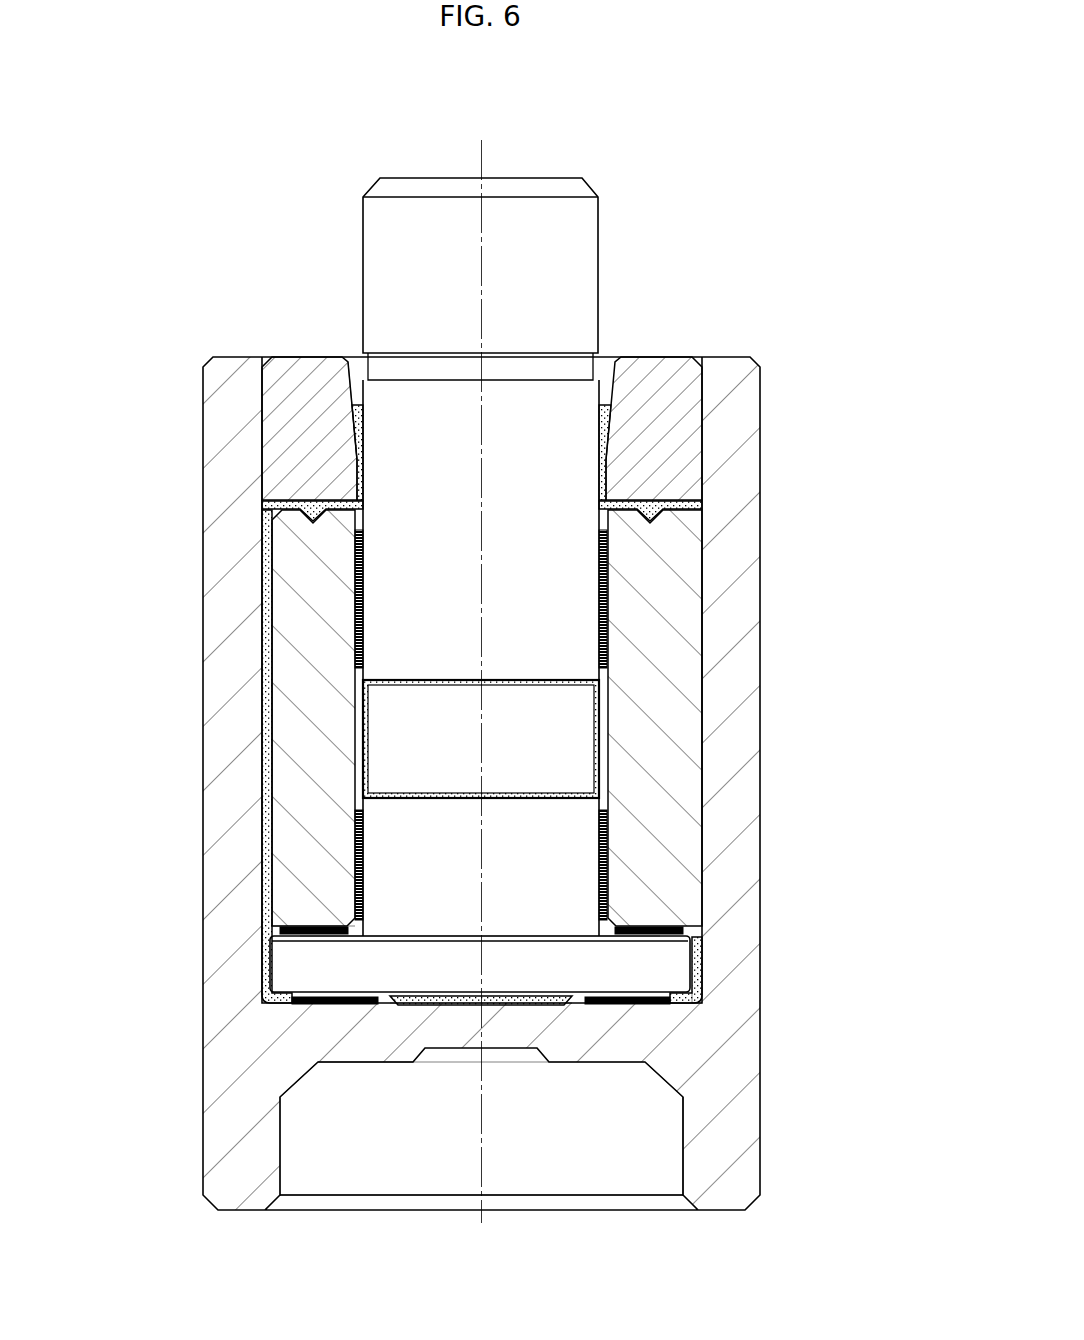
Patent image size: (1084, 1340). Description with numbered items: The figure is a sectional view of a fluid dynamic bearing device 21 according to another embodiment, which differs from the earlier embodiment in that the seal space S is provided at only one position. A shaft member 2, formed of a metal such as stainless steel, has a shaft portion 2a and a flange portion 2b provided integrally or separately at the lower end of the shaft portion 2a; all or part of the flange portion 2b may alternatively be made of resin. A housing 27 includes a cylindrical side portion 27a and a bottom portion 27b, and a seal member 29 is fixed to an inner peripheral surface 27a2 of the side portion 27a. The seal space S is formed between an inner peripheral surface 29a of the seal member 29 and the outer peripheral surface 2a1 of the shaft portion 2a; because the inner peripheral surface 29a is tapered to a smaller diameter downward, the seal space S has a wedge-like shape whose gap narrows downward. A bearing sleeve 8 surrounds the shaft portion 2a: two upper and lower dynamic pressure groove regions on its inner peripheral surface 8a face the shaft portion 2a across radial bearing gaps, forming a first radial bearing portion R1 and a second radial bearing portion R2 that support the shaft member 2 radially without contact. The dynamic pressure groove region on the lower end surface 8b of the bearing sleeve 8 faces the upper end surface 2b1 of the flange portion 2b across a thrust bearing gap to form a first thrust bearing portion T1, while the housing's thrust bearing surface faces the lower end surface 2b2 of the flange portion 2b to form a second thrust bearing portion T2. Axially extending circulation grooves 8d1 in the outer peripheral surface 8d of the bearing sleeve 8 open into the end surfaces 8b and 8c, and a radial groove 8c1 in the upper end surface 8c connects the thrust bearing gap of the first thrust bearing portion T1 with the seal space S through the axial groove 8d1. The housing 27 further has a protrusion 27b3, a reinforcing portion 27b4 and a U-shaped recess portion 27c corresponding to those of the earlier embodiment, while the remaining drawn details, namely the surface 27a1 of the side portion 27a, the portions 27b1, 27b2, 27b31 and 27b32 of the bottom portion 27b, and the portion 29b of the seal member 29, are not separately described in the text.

The shaft member 2 is at (604, 180).
The fluid dynamic bearing device 21 is at (778, 238).
The shaft portion 2a is at (577, 437).
The outer peripheral surface of the shaft portion 2a1 is at (345, 428).
The flange portion 2b is at (676, 962).
The upper end surface of the flange portion 2b1 is at (408, 935).
The lower end surface of the flange portion 2b2 is at (406, 1007).
The seal space S is at (356, 395).
The bearing sleeve 8 is at (669, 600).
The inner peripheral surface of the bearing sleeve 8a is at (586, 724).
The lower end surface of the bearing sleeve 8b is at (304, 938).
The upper end surface of the bearing sleeve 8c is at (660, 496).
The radial groove 8c1 is at (348, 500).
The outer peripheral surface of the bearing sleeve 8d is at (703, 757).
The circulation groove 8d1 is at (268, 696).
The housing 27 is at (215, 765).
The cylindrical side portion 27a is at (750, 471).
The housing inner peripheral surface 27a1 is at (758, 643).
The inner peripheral surface of the side portion 27a2 is at (700, 786).
The bottom portion 27b is at (598, 1031).
The housing bottom support surface 27b1 is at (556, 986).
The recess top surface 27b2 is at (345, 1063).
The protrusion 27b3 is at (720, 1167).
The recess side wall chamfer 27b31 is at (727, 1186).
The recess lower chamfer 27b32 is at (680, 1200).
The reinforcing portion 27b4 is at (666, 1180).
The U-shaped recess portion 27c is at (706, 986).
The seal member 29 is at (690, 455).
The inner peripheral surface of the seal member 29a is at (608, 403).
The bushing bottom portion 29b is at (631, 511).
The first radial bearing portion R1 is at (350, 600).
The second radial bearing portion R2 is at (350, 880).
The first thrust bearing portion T1 is at (665, 923).
The second thrust bearing portion T2 is at (333, 1010).